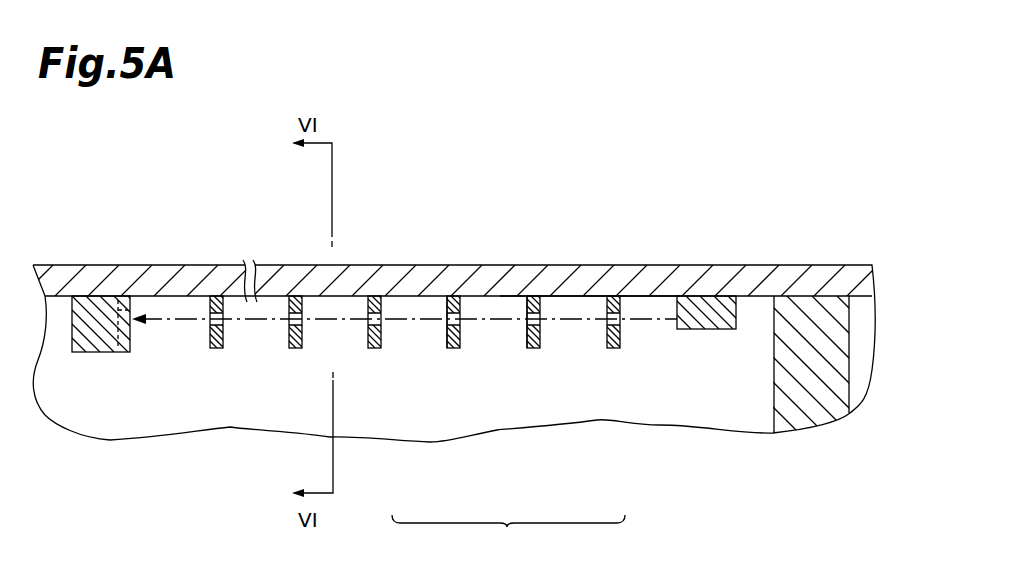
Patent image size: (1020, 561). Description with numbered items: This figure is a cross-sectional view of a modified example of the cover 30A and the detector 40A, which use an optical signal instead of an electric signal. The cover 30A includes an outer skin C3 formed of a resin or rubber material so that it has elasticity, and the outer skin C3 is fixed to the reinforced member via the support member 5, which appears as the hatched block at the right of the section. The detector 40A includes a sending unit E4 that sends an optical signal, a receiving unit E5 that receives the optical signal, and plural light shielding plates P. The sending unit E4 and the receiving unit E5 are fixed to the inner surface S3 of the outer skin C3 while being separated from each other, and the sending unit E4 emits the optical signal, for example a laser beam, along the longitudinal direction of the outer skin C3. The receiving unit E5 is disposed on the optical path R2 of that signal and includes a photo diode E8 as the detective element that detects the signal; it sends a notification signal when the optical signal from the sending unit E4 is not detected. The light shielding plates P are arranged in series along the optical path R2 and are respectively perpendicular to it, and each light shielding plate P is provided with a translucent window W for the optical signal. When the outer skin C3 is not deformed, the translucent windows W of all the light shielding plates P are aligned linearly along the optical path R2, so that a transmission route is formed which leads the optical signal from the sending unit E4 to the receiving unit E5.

The cover 30A is at (457, 238).
The translucent window W is at (216, 296).
The outer skin C3 is at (388, 280).
The inner surface S3 is at (563, 296).
The optical path R2 is at (657, 310).
The receiving unit E5 is at (107, 352).
The photo diode E8 is at (130, 353).
The light shielding plate P is at (455, 348).
The sending unit E4 is at (703, 330).
The detector 40A is at (508, 537).
The support member 5 is at (817, 397).